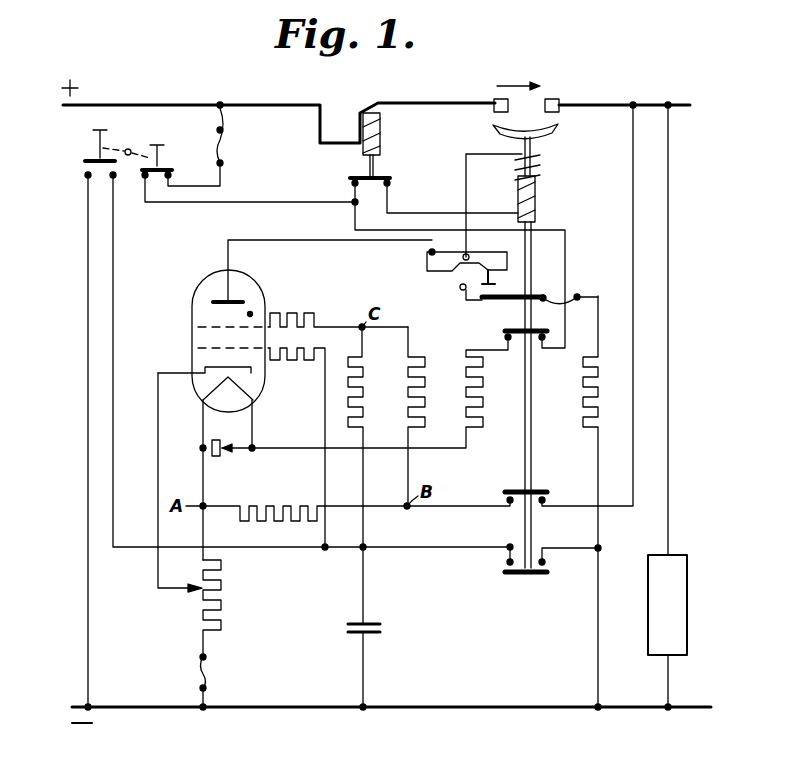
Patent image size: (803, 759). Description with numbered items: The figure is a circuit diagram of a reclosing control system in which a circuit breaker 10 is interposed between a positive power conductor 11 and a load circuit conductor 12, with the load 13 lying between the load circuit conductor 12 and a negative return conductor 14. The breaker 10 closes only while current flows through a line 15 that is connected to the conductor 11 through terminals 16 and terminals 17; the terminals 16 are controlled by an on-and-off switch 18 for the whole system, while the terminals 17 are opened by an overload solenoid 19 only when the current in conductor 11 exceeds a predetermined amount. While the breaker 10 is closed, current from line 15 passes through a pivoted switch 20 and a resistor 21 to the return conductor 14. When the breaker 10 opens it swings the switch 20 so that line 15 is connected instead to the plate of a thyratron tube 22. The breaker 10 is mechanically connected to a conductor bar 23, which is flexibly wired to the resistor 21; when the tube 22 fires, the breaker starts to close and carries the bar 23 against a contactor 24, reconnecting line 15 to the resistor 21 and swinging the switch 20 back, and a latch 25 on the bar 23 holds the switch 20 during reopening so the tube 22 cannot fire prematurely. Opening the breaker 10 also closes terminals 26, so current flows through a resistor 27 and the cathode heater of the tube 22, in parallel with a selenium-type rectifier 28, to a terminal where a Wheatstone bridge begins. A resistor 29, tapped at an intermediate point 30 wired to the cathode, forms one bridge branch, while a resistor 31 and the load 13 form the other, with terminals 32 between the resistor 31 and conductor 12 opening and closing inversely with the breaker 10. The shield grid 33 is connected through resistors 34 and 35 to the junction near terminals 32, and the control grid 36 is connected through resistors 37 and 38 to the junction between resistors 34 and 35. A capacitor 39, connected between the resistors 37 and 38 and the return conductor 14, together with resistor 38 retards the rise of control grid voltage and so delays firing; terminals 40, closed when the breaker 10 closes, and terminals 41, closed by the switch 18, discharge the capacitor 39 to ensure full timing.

The circuit breaker 10 is at (540, 128).
The positive power conductor 11 is at (168, 105).
The load circuit conductor 12 is at (572, 105).
The load 13 is at (676, 584).
The negative return conductor 14 is at (452, 710).
The line 15 is at (466, 178).
The terminals 16 is at (170, 176).
The terminals 17 is at (350, 183).
The on-and-off switch 18 is at (128, 149).
The overload solenoid 19 is at (381, 124).
The switch 20 is at (478, 268).
The resistor 21 is at (583, 394).
The thyratron tube 22 is at (300, 285).
The conductor bar 23 is at (532, 294).
The contactor 24 is at (460, 288).
The latch 25 is at (466, 300).
The terminals 26 is at (508, 337).
The resistor 27 is at (483, 390).
The selenium-type rectifier 28 is at (216, 440).
The resistor 29 is at (222, 596).
The intermediate point 30 is at (194, 590).
The resistor 31 is at (290, 506).
The terminals 32 is at (506, 497).
The shield grid 33 is at (205, 327).
The resistor 34 is at (292, 313).
The resistor 35 is at (425, 390).
The control grid 36 is at (203, 348).
The resistor 37 is at (294, 362).
The resistor 38 is at (363, 388).
The capacitor 39 is at (382, 628).
The terminals 40 is at (500, 565).
The terminals 41 is at (85, 175).